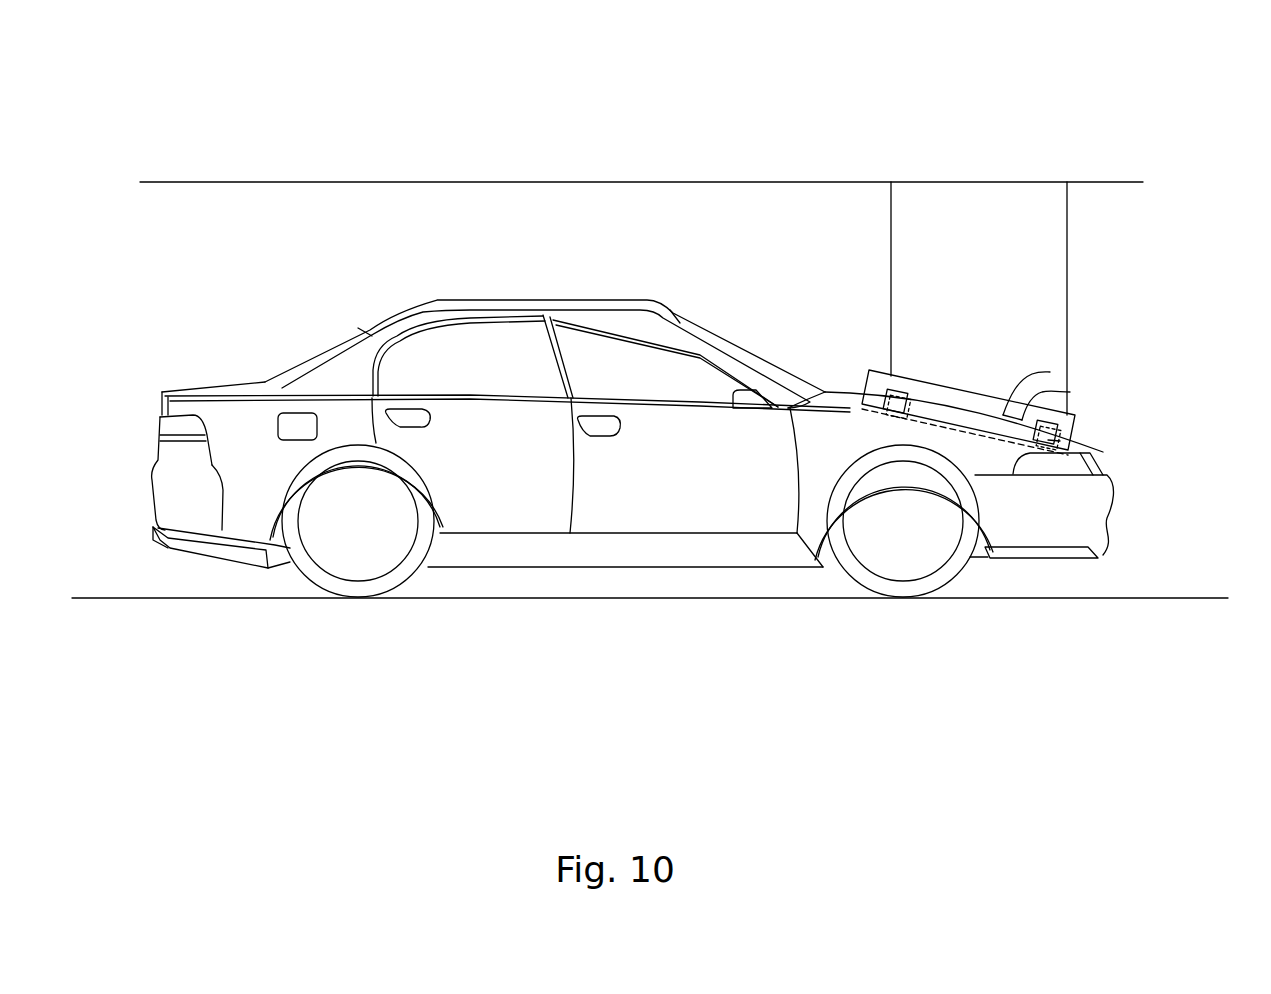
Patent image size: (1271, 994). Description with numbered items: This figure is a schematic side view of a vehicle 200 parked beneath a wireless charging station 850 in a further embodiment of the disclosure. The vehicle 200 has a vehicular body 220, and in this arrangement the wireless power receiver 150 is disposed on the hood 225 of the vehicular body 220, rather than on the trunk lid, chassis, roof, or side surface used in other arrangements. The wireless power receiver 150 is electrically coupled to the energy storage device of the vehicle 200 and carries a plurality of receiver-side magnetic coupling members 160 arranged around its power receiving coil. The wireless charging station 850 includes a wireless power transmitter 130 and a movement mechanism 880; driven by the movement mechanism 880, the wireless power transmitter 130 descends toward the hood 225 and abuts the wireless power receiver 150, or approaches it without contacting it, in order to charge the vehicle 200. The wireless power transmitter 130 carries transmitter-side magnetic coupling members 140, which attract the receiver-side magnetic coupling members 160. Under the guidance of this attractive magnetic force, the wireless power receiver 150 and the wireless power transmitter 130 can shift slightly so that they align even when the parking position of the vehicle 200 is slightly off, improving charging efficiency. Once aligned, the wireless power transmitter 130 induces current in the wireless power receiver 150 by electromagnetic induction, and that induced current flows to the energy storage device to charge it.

The wireless charging station 850 is at (985, 132).
The movement mechanism 880 is at (1066, 239).
The vehicle 200 is at (672, 420).
The vehicular body 220 is at (232, 428).
The hood 225 is at (841, 400).
The wireless power receiver 150 is at (1050, 372).
The wireless power transmitter 130 is at (1070, 392).
The transmitter-side magnetic coupling members 140 is at (1048, 427).
The receiver-side magnetic coupling members 160 is at (1050, 440).